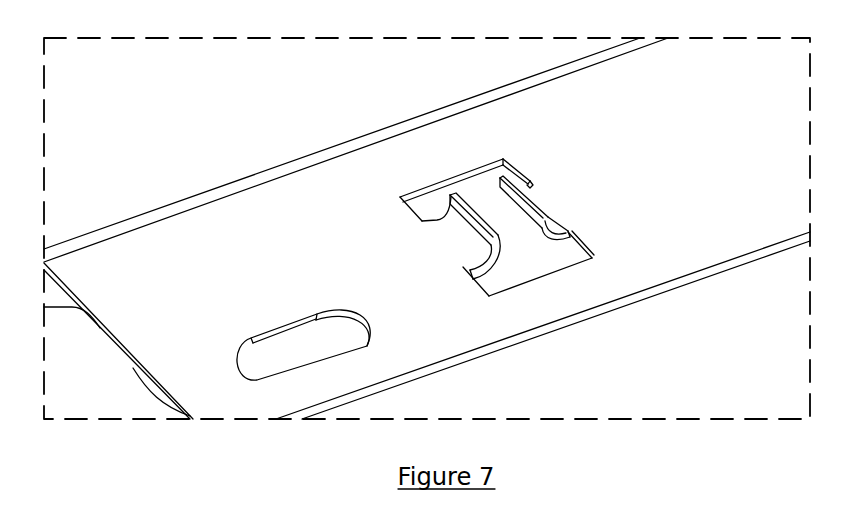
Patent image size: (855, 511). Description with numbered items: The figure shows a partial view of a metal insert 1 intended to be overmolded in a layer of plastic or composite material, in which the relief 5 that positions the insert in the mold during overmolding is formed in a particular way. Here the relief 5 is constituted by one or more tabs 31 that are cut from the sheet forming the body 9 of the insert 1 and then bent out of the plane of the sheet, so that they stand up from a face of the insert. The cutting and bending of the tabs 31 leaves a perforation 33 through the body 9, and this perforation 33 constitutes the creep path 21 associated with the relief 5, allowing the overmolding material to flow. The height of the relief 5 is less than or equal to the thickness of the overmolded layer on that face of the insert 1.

The insert 1 is at (259, 135).
The body 9 is at (219, 255).
The creep path 21 is at (534, 259).
The tabs 31 is at (455, 218).
The perforation 33 is at (569, 246).
The relief 5 is at (508, 184).